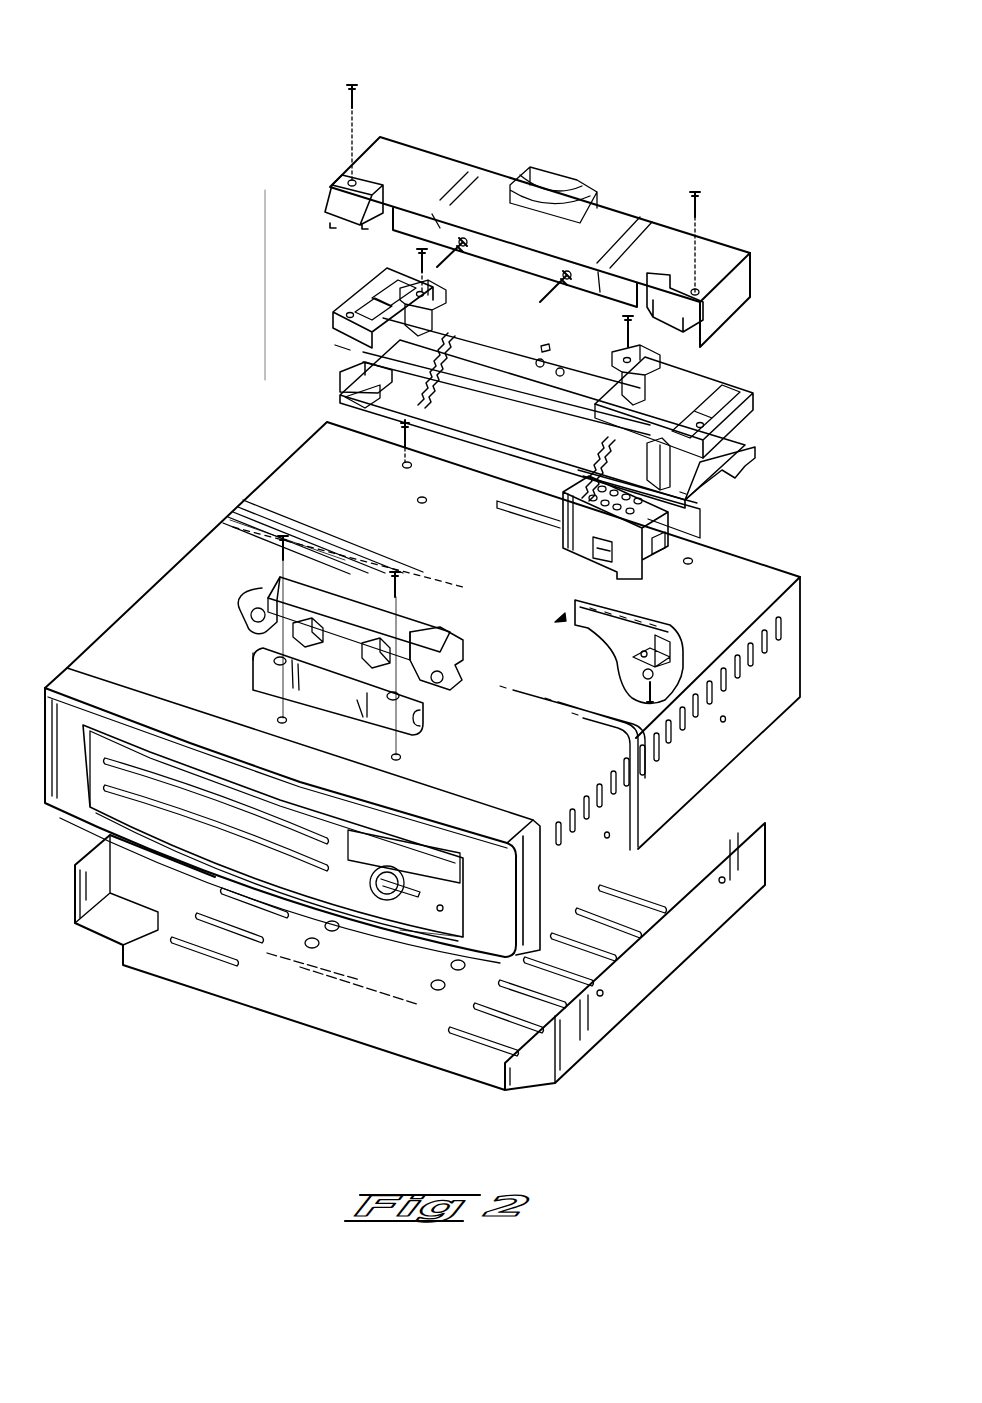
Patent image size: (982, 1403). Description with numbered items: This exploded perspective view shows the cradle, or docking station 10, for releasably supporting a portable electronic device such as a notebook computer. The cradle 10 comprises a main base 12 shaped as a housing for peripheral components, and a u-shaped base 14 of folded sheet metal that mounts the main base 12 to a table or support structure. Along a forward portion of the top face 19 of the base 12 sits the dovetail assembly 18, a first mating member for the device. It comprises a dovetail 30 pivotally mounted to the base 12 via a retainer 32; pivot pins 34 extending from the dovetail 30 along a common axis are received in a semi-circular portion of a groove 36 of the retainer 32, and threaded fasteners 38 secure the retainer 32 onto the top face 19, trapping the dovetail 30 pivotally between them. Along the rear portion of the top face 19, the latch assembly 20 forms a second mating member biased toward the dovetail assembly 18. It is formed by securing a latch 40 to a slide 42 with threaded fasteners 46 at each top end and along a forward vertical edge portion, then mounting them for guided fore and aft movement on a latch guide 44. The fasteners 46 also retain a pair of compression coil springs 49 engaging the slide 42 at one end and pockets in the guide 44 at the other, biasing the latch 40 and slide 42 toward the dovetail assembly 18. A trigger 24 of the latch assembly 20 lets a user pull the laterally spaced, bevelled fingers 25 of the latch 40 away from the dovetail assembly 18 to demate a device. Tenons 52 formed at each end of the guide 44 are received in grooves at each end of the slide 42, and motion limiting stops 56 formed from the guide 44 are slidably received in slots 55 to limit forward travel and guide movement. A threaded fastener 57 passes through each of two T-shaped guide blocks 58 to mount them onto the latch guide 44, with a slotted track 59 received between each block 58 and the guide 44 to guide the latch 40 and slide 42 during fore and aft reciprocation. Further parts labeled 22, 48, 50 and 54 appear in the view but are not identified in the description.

The cradle 10 is at (148, 372).
The main base 12 is at (792, 650).
The u-shaped base 14 is at (643, 976).
The dovetail assembly 18 is at (532, 658).
The top face 19 is at (556, 774).
The latch assembly 20 is at (270, 185).
The connector / bracket 22 is at (562, 532).
The trigger 24 is at (540, 203).
The fingers 25 is at (333, 200).
The dovetail 30 is at (240, 595).
The retainer 32 is at (260, 674).
The pivot pins 34 is at (300, 630).
The groove 36 is at (430, 717).
The threaded fasteners 38 is at (400, 558).
The latch 40 is at (722, 257).
The slide 42 is at (755, 402).
The latch guide 44 is at (733, 452).
The threaded fasteners 46 is at (353, 70).
The screw 48 is at (560, 282).
The compression coil springs 49 is at (596, 447).
The screw 50 is at (393, 425).
The tenons 52 is at (345, 380).
The lugs 54 is at (332, 343).
The slots 55 is at (655, 410).
The motion limiting stops 56 is at (352, 396).
The threaded fastener 57 is at (413, 257).
The T-shaped guide blocks 58 is at (430, 297).
The slotted track 59 is at (435, 333).